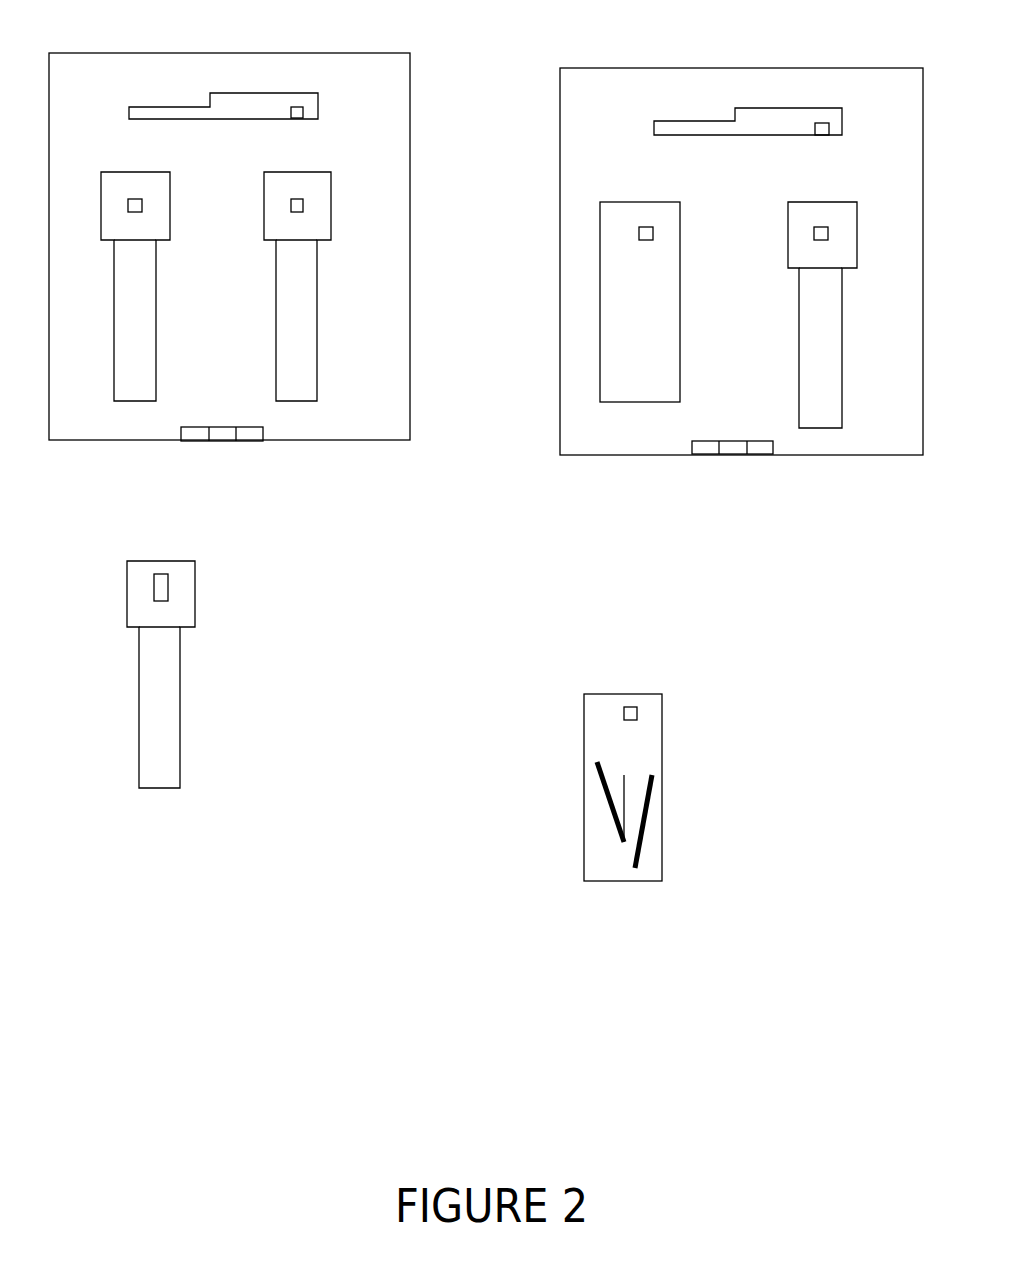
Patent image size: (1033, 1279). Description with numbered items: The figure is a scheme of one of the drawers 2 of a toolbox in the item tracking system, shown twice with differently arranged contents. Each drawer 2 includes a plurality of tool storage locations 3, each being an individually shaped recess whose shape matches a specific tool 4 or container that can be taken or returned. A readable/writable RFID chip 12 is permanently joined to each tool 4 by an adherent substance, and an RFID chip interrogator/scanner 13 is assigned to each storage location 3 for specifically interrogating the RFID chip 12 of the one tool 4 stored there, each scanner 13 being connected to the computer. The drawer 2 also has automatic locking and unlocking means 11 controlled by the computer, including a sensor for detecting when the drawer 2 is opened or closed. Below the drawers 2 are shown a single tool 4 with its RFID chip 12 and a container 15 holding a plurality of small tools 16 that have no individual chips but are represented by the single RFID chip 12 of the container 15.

The drawer 2 is at (357, 443).
The tool storage location 3 is at (479, 247).
The tool 4 is at (154, 708).
The automatic locking and unlocking means 11 is at (237, 443).
The RFID chip 12 is at (170, 590).
The RFID chip interrogator/scanner 13 is at (307, 117).
The container 15 is at (666, 751).
The tools 16 is at (624, 857).